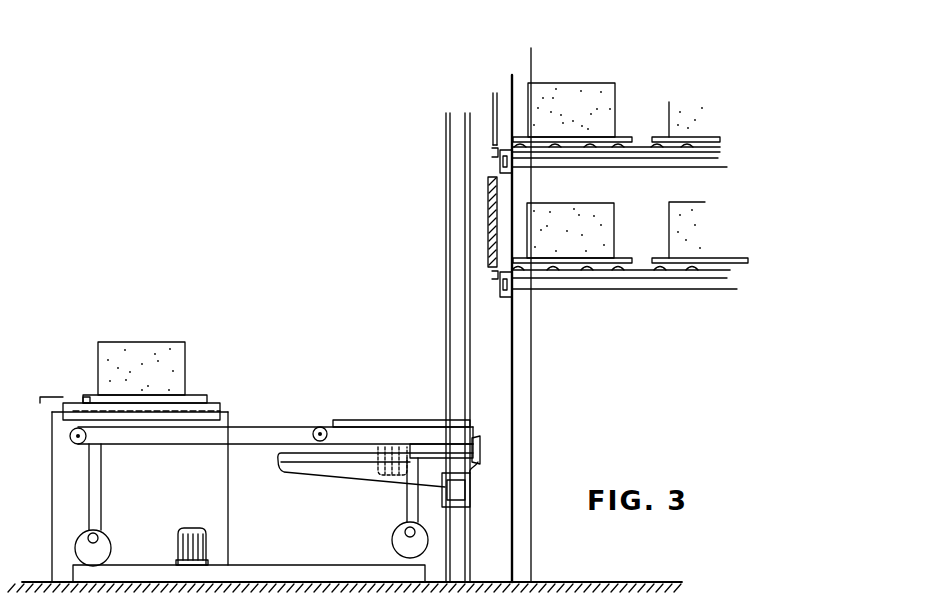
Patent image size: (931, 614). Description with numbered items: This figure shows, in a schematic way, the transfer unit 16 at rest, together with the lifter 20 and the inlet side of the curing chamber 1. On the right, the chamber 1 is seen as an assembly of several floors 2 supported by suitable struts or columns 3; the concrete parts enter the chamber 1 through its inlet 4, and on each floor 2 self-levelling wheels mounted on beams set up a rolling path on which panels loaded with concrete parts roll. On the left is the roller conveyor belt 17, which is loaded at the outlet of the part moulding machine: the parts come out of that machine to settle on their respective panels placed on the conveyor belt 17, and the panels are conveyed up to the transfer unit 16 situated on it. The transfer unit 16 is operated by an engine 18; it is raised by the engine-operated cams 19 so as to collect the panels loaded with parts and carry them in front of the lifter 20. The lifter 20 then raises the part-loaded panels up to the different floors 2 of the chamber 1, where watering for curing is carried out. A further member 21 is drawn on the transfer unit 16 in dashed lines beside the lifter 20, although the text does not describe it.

The chamber 1 is at (618, 311).
The floors 2 is at (651, 200).
The struts or columns 3 is at (522, 383).
The inlet 4 is at (440, 187).
The transfer unit 16 is at (403, 435).
The roller conveyor belt 17 is at (70, 413).
The engine 18 is at (192, 533).
The cams 19 is at (105, 550).
The lifter 20 is at (310, 467).
The coupling member 21 is at (375, 470).